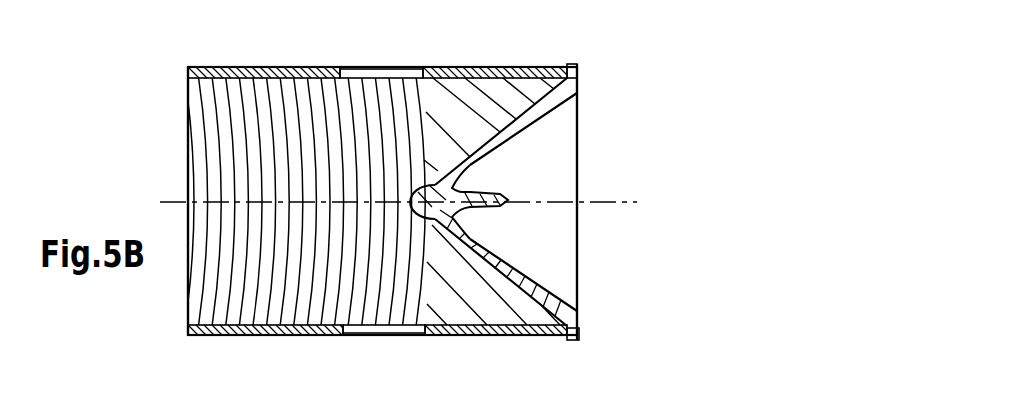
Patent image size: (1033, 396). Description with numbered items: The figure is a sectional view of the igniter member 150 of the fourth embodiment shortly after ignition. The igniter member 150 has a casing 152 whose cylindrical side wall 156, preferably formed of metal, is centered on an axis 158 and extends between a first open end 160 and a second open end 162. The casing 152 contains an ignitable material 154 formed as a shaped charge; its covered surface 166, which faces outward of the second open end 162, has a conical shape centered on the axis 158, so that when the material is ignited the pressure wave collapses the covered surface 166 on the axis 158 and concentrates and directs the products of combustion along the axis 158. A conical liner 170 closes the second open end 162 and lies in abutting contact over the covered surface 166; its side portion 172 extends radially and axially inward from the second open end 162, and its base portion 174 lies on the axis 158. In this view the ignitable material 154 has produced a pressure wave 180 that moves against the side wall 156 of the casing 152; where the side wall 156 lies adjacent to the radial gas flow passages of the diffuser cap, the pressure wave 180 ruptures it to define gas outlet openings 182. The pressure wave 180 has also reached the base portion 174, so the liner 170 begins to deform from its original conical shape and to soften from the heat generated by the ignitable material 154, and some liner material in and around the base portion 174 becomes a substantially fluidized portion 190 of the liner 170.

The igniter member 150 is at (150, 52).
The casing 152 is at (273, 60).
The ignitable material 154 is at (480, 82).
The cylindrical side wall 156 is at (308, 67).
The axis 158 is at (616, 202).
The first open end 160 is at (190, 331).
The second open end 162 is at (580, 336).
The covered surface 166 is at (500, 265).
The liner 170 is at (543, 272).
The side portion 172 is at (547, 105).
The base portion 174 is at (410, 204).
The pressure wave 180 is at (222, 176).
The gas outlet openings 182 is at (388, 67).
The fluidized portion 190 is at (509, 199).